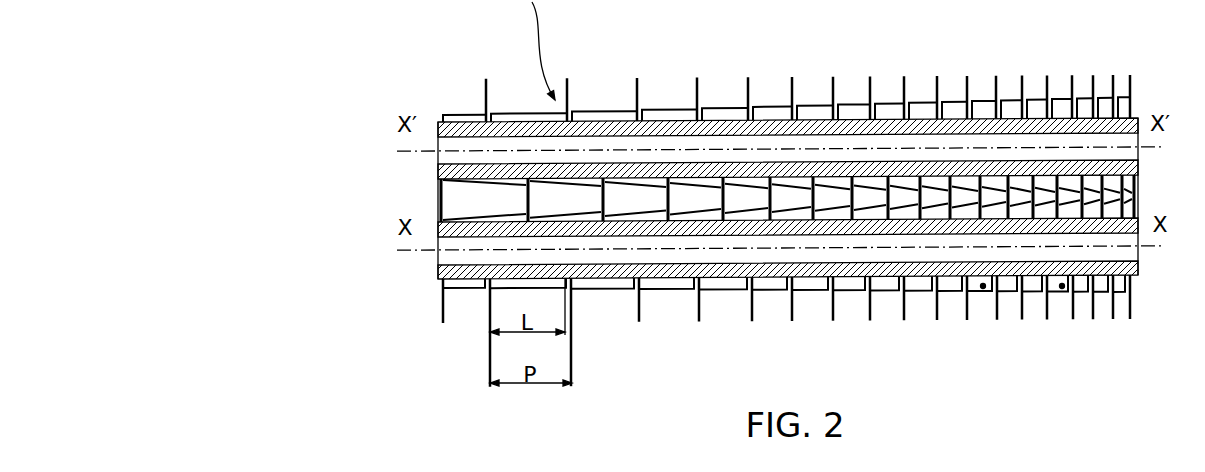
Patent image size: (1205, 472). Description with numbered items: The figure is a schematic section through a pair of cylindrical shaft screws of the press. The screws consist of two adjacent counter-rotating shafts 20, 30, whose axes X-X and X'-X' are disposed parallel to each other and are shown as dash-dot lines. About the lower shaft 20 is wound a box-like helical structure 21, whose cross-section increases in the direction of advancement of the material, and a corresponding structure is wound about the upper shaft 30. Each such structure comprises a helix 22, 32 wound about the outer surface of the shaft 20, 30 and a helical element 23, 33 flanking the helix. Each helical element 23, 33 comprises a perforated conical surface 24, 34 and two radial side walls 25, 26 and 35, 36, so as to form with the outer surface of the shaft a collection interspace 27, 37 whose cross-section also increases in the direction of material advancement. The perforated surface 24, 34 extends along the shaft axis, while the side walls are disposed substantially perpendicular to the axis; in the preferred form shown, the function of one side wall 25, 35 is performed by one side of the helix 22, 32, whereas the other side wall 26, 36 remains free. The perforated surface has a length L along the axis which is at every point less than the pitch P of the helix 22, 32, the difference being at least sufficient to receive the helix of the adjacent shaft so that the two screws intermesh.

The shaft 20 is at (802, 255).
The box-like helical structure 21 is at (667, 297).
The helix 22 is at (572, 302).
The helical element 23 is at (770, 292).
The perforated conical surface 24 is at (812, 298).
The radial side wall 25 is at (837, 285).
The radial side wall 26 is at (847, 288).
The collection interspace 27 is at (1062, 288).
The shaft 30 is at (810, 75).
The helix 32 is at (697, 100).
The helical element 33 is at (527, 111).
The perforated conical surface 34 is at (767, 102).
The radial side wall 35 is at (890, 110).
The radial side wall 36 is at (883, 110).
The collection interspace 37 is at (983, 110).